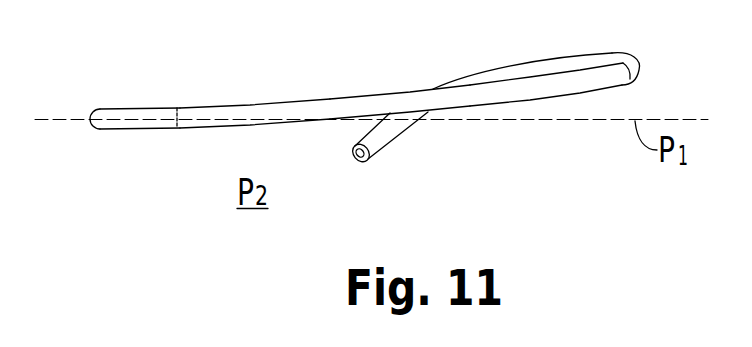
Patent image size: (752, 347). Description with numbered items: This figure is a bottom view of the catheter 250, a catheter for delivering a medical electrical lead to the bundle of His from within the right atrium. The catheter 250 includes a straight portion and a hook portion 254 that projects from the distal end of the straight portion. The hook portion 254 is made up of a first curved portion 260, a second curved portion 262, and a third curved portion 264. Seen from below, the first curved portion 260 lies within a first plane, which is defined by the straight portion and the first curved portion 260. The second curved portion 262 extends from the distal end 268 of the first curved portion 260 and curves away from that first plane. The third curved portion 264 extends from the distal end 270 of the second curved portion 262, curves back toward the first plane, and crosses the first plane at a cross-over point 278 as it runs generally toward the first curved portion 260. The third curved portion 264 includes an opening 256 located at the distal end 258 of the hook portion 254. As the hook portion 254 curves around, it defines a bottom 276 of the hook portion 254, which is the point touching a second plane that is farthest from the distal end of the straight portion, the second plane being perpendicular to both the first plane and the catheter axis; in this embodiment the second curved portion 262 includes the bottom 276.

The catheter 250 is at (100, 106).
The hook portion 254 is at (280, 102).
The opening 256 is at (355, 159).
The distal end of the hook portion 258 is at (372, 159).
The first curved portion 260 is at (145, 107).
The second curved portion 262 is at (560, 99).
The third curved portion 264 is at (538, 58).
The distal end of the first curved portion 268 is at (163, 130).
The distal end of the second curved portion 270 is at (628, 78).
The bottom of the hook portion 276 is at (371, 101).
The cross-over point 278 is at (418, 115).